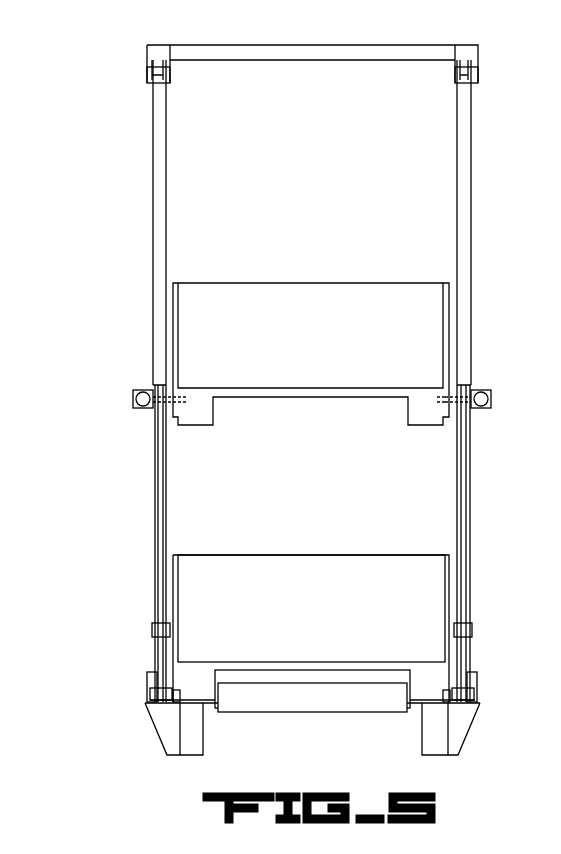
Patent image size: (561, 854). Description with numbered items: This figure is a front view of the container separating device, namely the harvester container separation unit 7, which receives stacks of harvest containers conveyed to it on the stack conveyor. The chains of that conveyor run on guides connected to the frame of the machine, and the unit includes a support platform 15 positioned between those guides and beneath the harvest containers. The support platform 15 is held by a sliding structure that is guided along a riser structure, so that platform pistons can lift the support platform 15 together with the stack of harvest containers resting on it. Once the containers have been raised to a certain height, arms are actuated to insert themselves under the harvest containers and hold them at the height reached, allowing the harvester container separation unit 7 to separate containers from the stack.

The harvester container separation unit 7 is at (97, 89).
The support platform 15 is at (287, 712).